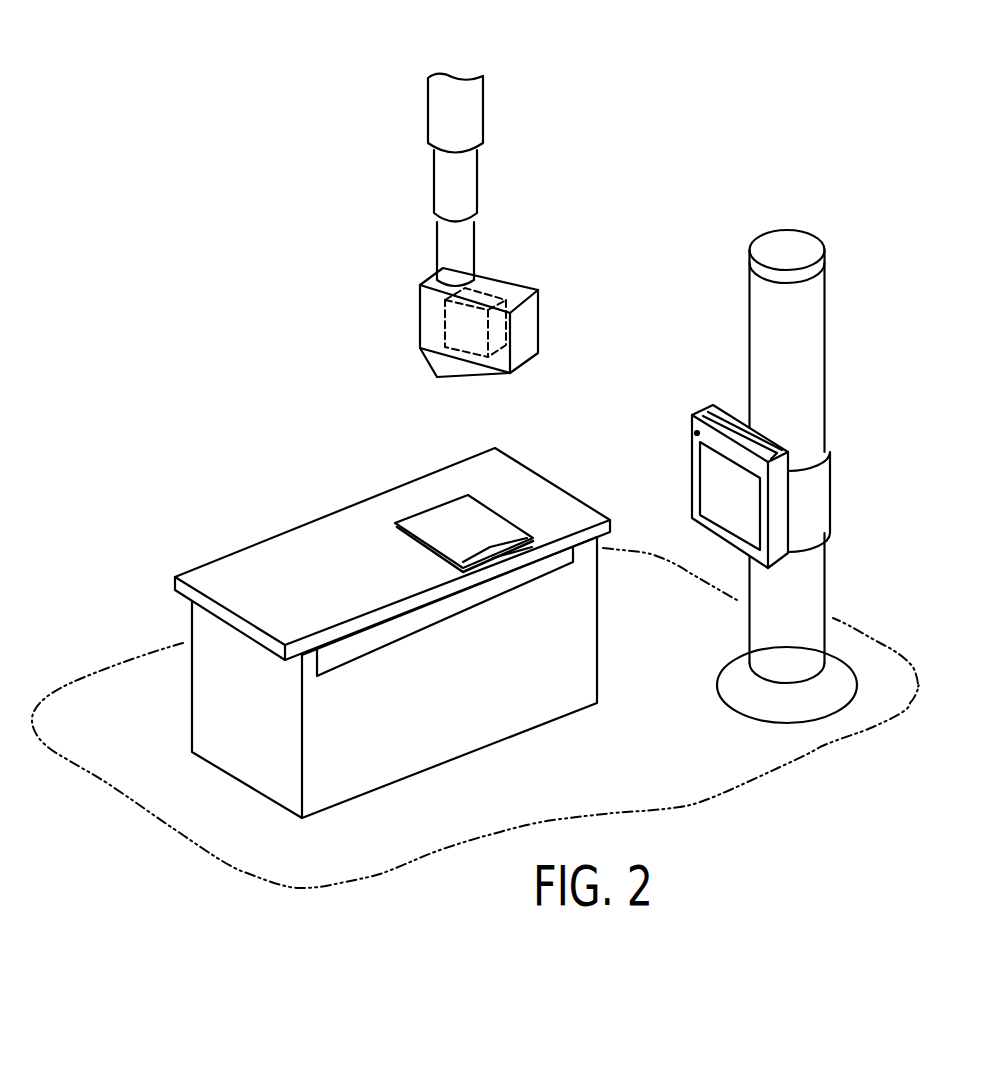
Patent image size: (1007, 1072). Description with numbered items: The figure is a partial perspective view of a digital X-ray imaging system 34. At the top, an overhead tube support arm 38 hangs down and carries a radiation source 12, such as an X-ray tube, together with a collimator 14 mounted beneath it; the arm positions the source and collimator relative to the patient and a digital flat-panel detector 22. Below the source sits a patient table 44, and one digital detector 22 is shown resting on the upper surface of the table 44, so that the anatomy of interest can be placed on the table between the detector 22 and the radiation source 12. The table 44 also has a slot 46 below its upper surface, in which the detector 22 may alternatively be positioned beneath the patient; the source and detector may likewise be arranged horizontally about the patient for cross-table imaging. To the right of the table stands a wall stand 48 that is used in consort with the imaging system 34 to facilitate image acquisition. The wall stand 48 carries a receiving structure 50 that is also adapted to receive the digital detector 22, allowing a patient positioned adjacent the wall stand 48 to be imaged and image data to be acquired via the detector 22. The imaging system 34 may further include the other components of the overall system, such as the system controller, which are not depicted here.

The imaging system 34 is at (590, 64).
The overhead tube support arm 38 is at (433, 125).
The collimator 14 is at (493, 382).
The radiation source 12 is at (507, 280).
The digital flat-panel detector 22 is at (447, 502).
The patient table 44 is at (487, 735).
The slot 46 is at (555, 575).
The wall stand 48 is at (755, 331).
The receiving structure 50 is at (690, 462).